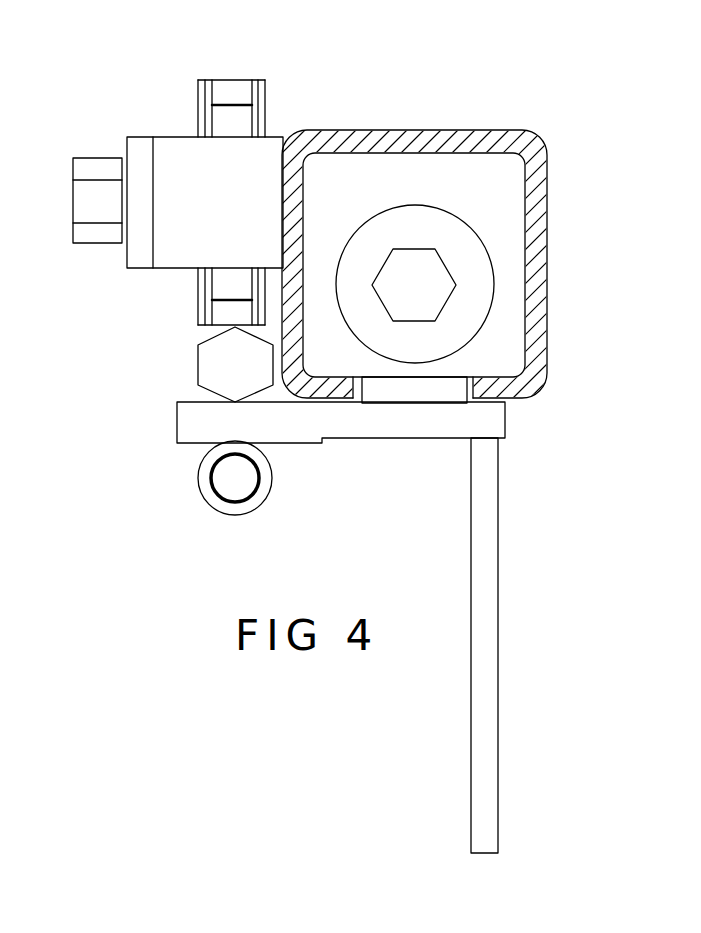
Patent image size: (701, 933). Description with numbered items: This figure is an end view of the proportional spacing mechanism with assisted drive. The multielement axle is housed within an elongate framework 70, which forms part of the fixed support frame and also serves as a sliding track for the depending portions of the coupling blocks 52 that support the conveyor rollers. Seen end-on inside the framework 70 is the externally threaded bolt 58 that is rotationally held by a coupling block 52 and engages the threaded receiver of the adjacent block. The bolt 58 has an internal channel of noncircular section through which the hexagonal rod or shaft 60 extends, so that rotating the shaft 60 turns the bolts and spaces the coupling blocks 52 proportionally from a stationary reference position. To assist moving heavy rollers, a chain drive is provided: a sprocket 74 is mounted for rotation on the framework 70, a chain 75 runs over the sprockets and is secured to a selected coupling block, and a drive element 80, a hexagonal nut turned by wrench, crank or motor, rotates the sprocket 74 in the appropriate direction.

The coupling block 52 is at (480, 558).
The externally threaded bolt 58 is at (483, 287).
The rod or shaft 60 is at (420, 250).
The elongate framework 70 is at (490, 128).
The sprocket 74 is at (232, 78).
The chain 75 is at (268, 80).
The drive element 80 is at (72, 163).